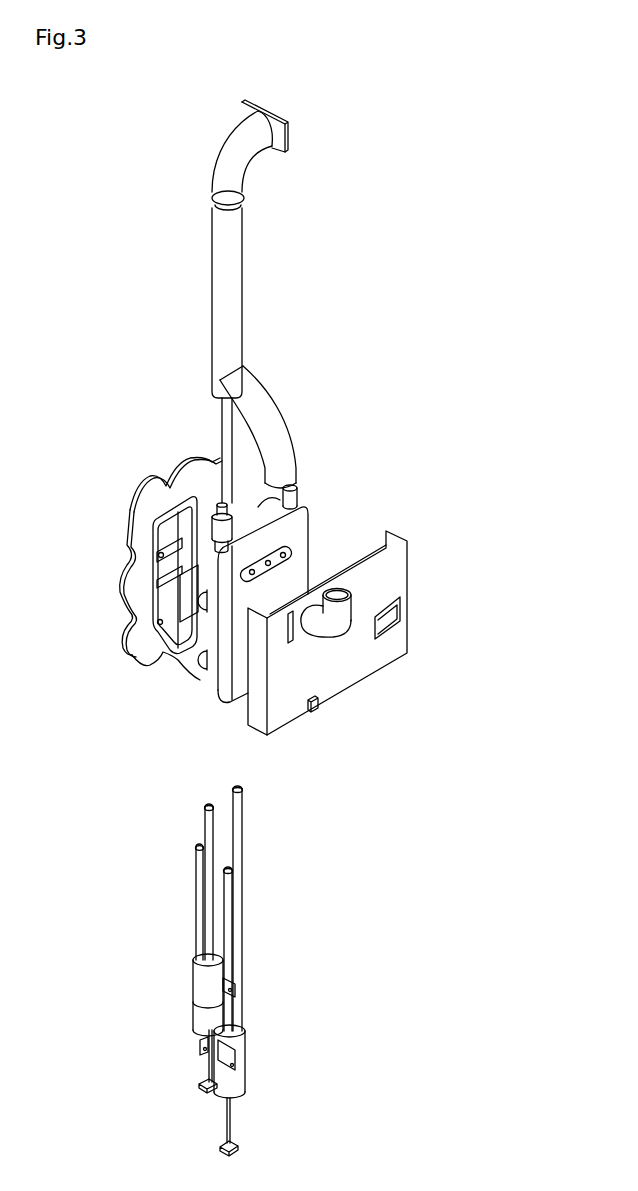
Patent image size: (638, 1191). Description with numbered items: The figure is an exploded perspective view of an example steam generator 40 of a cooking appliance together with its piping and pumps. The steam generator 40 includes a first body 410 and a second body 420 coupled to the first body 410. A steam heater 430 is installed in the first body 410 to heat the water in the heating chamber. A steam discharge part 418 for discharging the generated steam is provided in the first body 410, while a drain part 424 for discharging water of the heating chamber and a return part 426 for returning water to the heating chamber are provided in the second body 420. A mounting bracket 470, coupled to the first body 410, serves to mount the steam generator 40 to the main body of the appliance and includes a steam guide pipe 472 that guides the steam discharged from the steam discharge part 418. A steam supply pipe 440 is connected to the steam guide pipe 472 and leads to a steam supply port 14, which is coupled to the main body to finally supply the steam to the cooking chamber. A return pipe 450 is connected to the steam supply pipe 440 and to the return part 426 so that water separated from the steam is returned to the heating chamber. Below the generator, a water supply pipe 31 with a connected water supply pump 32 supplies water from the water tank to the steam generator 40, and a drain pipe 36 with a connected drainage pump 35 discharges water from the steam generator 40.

The steam supply port 14 is at (230, 146).
The steam generator 40 is at (121, 472).
The return pipe 450 is at (222, 435).
The steam supply pipe 440 is at (287, 447).
The steam heater 430 is at (216, 528).
The return part 426 is at (158, 555).
The second body 420 is at (137, 587).
The drain part 424 is at (130, 624).
The first body 410 is at (205, 684).
The steam discharge part 418 is at (289, 551).
The mounting bracket 470 is at (338, 682).
The steam guide pipe 472 is at (347, 609).
The water supply pipe 31 is at (243, 823).
The drain pipe 36 is at (197, 890).
The drainage pump 35 is at (200, 1009).
The water supply pump 32 is at (242, 1078).